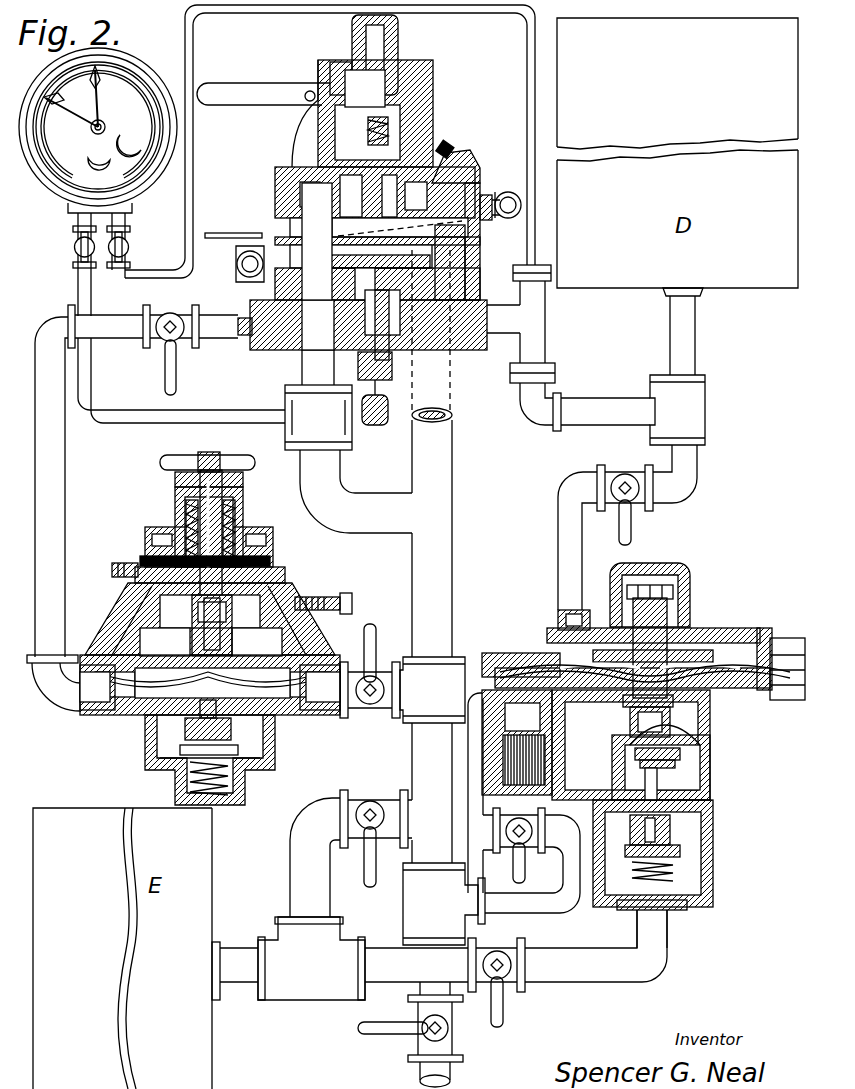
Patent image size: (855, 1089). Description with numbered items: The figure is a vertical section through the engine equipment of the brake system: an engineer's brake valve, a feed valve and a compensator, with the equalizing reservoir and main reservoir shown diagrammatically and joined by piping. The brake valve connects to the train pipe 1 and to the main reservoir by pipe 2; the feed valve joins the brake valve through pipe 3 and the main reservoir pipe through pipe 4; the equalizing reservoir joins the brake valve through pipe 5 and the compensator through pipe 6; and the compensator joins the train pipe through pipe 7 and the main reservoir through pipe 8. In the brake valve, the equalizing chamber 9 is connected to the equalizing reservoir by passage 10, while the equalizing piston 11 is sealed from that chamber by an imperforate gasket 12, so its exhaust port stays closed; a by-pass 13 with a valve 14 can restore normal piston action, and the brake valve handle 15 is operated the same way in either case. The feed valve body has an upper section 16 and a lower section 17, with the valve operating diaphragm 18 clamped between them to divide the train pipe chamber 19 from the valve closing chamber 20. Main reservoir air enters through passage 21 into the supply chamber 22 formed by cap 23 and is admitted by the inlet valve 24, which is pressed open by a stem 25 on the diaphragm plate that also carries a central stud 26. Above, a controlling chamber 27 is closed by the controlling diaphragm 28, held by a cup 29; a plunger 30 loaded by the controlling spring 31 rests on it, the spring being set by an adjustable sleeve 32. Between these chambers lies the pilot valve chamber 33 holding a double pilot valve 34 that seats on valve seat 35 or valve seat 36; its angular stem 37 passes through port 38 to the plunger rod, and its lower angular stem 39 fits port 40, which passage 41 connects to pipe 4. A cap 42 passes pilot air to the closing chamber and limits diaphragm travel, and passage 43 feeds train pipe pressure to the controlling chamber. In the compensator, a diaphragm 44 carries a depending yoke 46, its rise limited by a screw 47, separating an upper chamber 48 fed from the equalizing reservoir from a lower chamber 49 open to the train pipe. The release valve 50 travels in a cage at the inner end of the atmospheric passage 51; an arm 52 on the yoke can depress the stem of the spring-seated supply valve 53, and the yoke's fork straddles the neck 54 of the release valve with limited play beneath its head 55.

The train pipe 1 is at (450, 437).
The pipe 2 is at (355, 508).
The pipe 3 is at (58, 490).
The main reservoir supply pipe 4 is at (370, 705).
The pipe 5 is at (545, 348).
The pipe 6 is at (558, 515).
The pipe 7 is at (568, 900).
The pipe 8 is at (575, 982).
The equalizing chamber 9 is at (455, 172).
The passage 10 is at (445, 262).
The equalizing piston 11 is at (428, 350).
The blind gasket 12 is at (486, 194).
The by-pass 13 is at (515, 205).
The valve 14 is at (242, 233).
The brake valve handle 15 is at (238, 100).
The upper section 16 is at (135, 604).
The lower section 17 is at (140, 708).
The valve operating diaphragm 18 is at (300, 648).
The train pipe chamber 19 is at (112, 712).
The valve closing chamber 20 is at (145, 632).
The passage 21 is at (278, 700).
The main reservoir supply chamber 22 is at (268, 752).
The cap 23 is at (250, 778).
The inlet valve 24 is at (195, 760).
The stem 25 is at (190, 735).
The central stud 26 is at (370, 645).
The controlling chamber 27 is at (235, 598).
The controlling diaphragm 28 is at (268, 538).
The cup 29 is at (158, 527).
The plunger 30 is at (245, 485).
The controlling spring 31 is at (248, 512).
The adjustable sleeve 32 is at (228, 462).
The pilot valve chamber 33 is at (230, 612).
The double pilot valve 34 is at (240, 620).
The valve seat 35 is at (238, 608).
The valve seat 36 is at (165, 642).
The angular stem 37 is at (140, 570).
The port 38 is at (118, 572).
The angular stem 39 is at (305, 602).
The port 40 is at (122, 652).
The passage 41 is at (350, 603).
The cap 42 is at (257, 642).
The passage 43 is at (100, 685).
The diaphragm 44 is at (570, 678).
The yoke 46 is at (622, 702).
The screw 47 is at (650, 590).
The upper chamber 48 is at (730, 645).
The lower chamber 49 is at (596, 745).
The release valve 50 is at (685, 752).
The passage 51 is at (680, 766).
The arm 52 is at (660, 785).
The supply valve 53 is at (672, 830).
The neck 54 is at (635, 725).
The head 55 is at (690, 722).